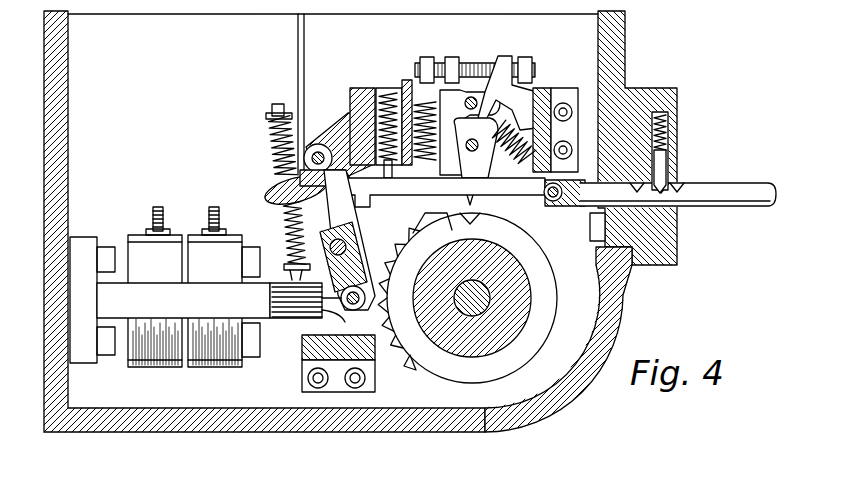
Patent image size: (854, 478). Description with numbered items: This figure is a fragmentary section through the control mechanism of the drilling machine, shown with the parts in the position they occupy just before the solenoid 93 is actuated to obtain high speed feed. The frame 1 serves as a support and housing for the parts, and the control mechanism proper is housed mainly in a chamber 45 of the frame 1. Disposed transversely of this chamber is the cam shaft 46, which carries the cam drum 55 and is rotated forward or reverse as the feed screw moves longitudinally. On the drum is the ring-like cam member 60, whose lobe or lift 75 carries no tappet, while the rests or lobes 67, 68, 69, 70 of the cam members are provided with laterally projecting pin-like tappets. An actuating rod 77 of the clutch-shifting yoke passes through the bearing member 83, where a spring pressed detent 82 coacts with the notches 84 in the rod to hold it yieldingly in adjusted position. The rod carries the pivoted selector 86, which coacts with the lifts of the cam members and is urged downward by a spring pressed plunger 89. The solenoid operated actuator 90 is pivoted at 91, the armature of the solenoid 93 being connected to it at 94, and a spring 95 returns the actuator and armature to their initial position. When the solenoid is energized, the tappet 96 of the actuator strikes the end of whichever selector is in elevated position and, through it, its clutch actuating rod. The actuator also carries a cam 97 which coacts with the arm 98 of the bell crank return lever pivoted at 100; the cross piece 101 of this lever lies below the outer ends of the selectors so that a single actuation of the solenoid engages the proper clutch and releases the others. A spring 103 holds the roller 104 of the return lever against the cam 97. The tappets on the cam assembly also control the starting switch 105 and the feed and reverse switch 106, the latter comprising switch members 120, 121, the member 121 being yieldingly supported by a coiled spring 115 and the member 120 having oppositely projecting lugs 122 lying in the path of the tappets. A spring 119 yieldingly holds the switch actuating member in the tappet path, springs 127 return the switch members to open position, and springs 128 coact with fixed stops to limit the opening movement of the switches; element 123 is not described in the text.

The frame 1 is at (568, 383).
The chamber 45 is at (604, 314).
The cam shaft 46 is at (490, 297).
The cam drum 55 is at (516, 270).
The cam member 60 is at (545, 250).
The rest or lobe 67 is at (416, 368).
The rest or lobe 68 is at (398, 300).
The rest or lobe 69 is at (395, 250).
The rest or lobe 70 is at (445, 216).
The lobe or lift 75 is at (488, 214).
The actuating rod 77 is at (752, 206).
The spring pressed detent 82 is at (664, 165).
The bearing member 83 is at (668, 107).
The notch 84 is at (676, 186).
The selector 86 is at (406, 190).
The spring pressed plunger 89 is at (398, 178).
The actuator 90 is at (288, 216).
The pivot 91 is at (288, 246).
The solenoid 93 is at (206, 228).
The connection 94 is at (302, 345).
The spring 95 is at (270, 156).
The tappet 96 is at (329, 174).
The cam 97 is at (270, 194).
The arm 98 is at (343, 132).
The pivot 100 is at (360, 88).
The cross piece 101 is at (372, 292).
The spring 103 is at (386, 88).
The roller 104 is at (312, 146).
The starting switch 105 is at (465, 58).
The feed and reverse switch 106 is at (528, 62).
The coiled spring 115 is at (451, 127).
The spring 119 is at (486, 126).
The switch member 120 is at (508, 58).
The switch member 121 is at (445, 58).
The lug 122 is at (495, 168).
The lever tip 123 is at (478, 183).
The spring 127 is at (570, 96).
The spring 128 is at (542, 96).